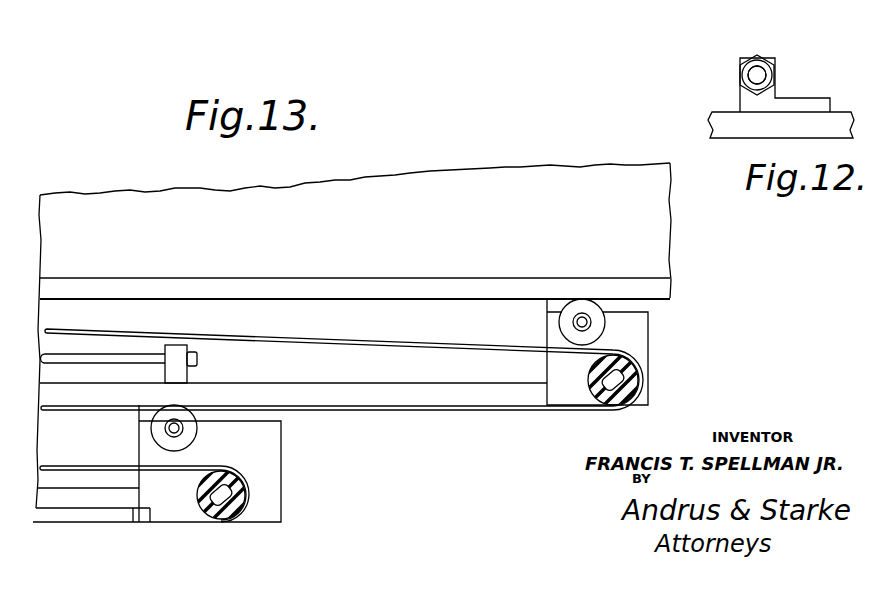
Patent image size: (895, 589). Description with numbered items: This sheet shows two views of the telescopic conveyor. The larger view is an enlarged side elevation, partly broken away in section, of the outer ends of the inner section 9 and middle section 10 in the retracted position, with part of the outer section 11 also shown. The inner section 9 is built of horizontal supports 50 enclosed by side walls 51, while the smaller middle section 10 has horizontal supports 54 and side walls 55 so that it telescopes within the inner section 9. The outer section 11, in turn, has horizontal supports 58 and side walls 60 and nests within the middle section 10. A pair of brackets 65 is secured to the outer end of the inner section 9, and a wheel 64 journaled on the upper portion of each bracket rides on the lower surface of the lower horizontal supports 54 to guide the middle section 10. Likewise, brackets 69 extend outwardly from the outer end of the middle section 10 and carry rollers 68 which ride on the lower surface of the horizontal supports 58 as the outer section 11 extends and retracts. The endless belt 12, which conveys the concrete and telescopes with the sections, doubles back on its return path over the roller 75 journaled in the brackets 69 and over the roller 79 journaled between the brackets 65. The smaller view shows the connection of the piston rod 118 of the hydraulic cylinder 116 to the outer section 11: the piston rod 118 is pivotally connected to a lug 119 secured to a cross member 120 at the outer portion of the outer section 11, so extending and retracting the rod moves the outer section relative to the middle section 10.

In FIG. 13, the inner section 9 is at (100, 512).
In FIG. 13, the middle section 10 is at (400, 410).
In FIG. 13, the outer section 11 is at (571, 166).
In FIG. 13, the endless belt 12 is at (431, 342).
In FIG. 13, the horizontal supports 50 is at (135, 505).
In FIG. 13, the side walls 51 is at (80, 483).
In FIG. 13, the horizontal supports 54 is at (475, 402).
In FIG. 13, the side walls 55 is at (520, 372).
In FIG. 13, the horizontal supports 58 is at (660, 288).
In FIG. 13, the side walls 60 is at (657, 235).
In FIG. 13, the wheel 64 is at (152, 432).
In FIG. 13, the brackets 65 is at (282, 450).
In FIG. 13, the rollers 68 is at (558, 322).
In FIG. 13, the brackets 69 is at (648, 350).
In FIG. 13, the roller 75 is at (640, 385).
In FIG. 13, the roller 79 is at (230, 523).
In FIG. 12, the hydraulic cylinder 116 is at (756, 54).
In FIG. 12, the piston rod 118 is at (745, 73).
In FIG. 12, the lug 119 is at (793, 99).
In FIG. 12, the cross member 120 is at (712, 122).